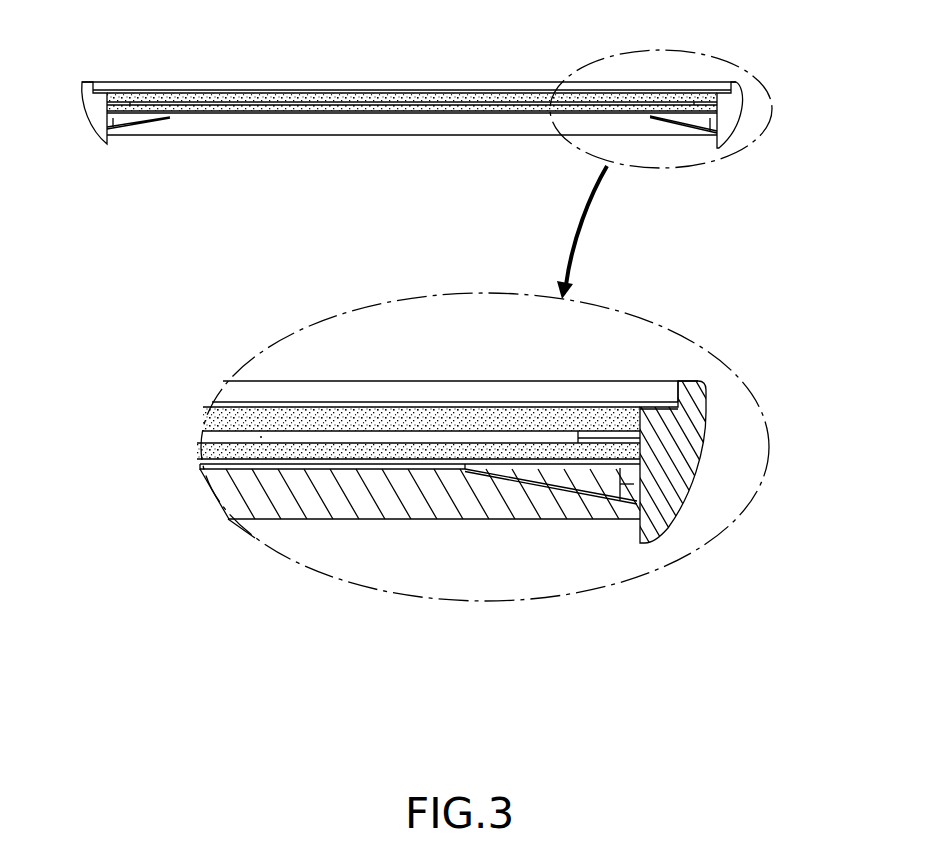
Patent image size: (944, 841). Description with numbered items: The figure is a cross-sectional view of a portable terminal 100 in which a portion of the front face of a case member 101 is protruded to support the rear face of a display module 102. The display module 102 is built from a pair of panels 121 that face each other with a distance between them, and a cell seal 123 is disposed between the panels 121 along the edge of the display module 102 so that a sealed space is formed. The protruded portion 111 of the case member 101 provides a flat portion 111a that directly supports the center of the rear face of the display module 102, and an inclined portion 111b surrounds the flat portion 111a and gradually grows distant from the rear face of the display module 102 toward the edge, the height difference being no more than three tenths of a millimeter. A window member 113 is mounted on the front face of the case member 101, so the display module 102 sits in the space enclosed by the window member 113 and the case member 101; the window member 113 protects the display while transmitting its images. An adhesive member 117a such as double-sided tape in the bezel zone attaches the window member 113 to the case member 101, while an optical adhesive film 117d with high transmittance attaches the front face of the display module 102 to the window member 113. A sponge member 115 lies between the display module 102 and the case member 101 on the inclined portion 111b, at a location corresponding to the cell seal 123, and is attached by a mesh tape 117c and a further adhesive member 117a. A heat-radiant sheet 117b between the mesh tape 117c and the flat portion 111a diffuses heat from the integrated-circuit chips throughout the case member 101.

The portable terminal 100 is at (207, 34).
The case member 101 is at (93, 131).
The display module 102 is at (667, 100).
The protruded portion 111 is at (387, 122).
The flat portion 111a is at (408, 473).
The inclined portion 111b is at (530, 483).
The window member 113 is at (415, 82).
The sponge member 115 is at (718, 118).
The adhesive member 117a is at (658, 405).
The heat-radiant sheet 117b is at (312, 469).
The mesh tape 117c is at (628, 485).
The optical adhesive film 117d is at (352, 407).
The panels 121 is at (615, 418).
The cell seal 123 is at (632, 440).